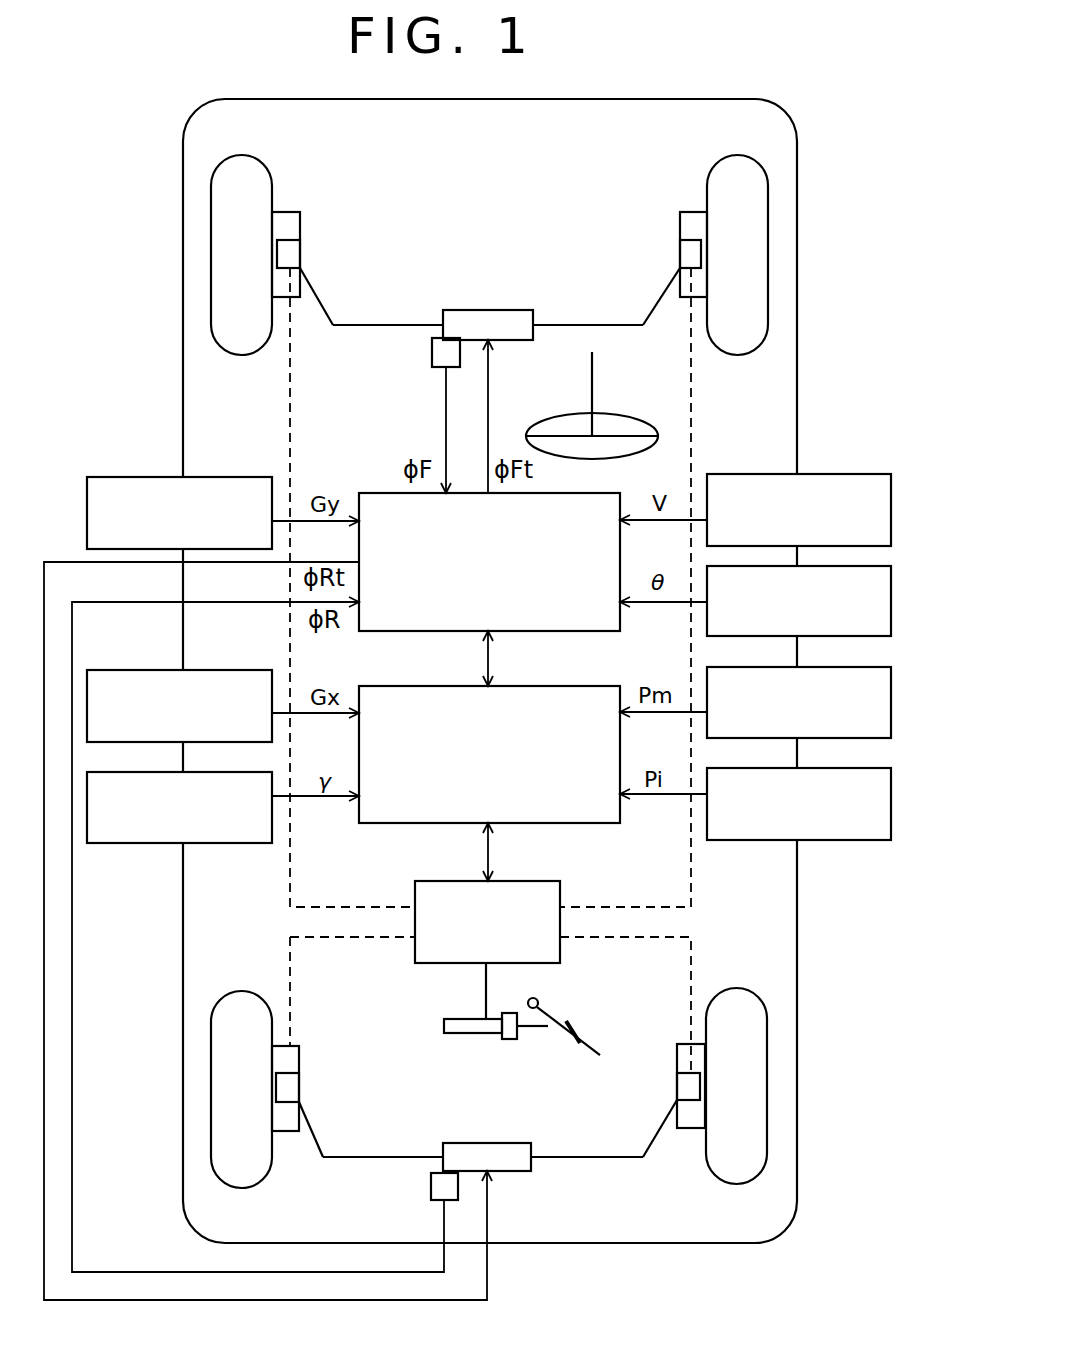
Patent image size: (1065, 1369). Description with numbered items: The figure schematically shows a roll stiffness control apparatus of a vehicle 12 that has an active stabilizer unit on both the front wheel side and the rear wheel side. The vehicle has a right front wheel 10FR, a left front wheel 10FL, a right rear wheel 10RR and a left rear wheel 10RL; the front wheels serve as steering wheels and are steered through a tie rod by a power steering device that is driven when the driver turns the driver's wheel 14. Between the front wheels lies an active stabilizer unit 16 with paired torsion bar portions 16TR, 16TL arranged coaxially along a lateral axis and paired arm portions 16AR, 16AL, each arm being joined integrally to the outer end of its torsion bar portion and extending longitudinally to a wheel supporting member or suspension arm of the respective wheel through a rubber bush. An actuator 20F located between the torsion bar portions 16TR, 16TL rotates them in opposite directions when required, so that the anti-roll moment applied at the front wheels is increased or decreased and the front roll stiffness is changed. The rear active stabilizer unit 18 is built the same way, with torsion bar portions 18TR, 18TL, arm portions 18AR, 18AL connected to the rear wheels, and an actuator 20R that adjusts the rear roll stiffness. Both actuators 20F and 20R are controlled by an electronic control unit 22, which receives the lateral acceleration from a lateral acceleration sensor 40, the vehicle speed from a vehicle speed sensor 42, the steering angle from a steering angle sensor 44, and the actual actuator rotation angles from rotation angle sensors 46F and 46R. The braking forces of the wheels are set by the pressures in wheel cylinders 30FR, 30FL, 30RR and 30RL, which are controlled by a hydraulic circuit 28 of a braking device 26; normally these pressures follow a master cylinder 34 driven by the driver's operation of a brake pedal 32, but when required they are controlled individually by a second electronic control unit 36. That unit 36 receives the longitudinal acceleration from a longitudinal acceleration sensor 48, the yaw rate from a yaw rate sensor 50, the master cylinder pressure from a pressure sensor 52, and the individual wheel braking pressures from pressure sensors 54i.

The left front wheel 10FL is at (211, 268).
The right front wheel 10FR is at (768, 268).
The left rear wheel 10RL is at (240, 991).
The right rear wheel 10RR is at (767, 1098).
The vehicle 12 is at (183, 395).
The driver's wheel 14 is at (564, 414).
The active stabilizer unit 16 is at (490, 255).
The arm portion 16AL is at (338, 283).
The arm portion 16AR is at (660, 298).
The torsion bar portion 16TL is at (418, 323).
The torsion bar portion 16TR is at (568, 294).
The active stabilizer unit 18 is at (488, 1152).
The arm portion 18AL is at (318, 1142).
The arm portion 18AR is at (660, 1134).
The torsion bar portion 18TL is at (418, 1157).
The torsion bar portion 18TR is at (578, 1158).
The actuator 20F is at (487, 310).
The actuator 20R is at (515, 1172).
The electronic control unit 22 is at (474, 600).
The braking device 26 is at (505, 1028).
The hydraulic circuit 28 is at (473, 958).
The wheel cylinder 30FL is at (300, 253).
The wheel cylinder 30FR is at (680, 253).
The wheel cylinder 30RL is at (299, 1088).
The wheel cylinder 30RR is at (677, 1086).
The brake pedal 32 is at (584, 1030).
The master cylinder 34 is at (462, 1018).
The electronic control unit 36 is at (474, 793).
The lateral acceleration sensor 40 is at (240, 477).
The vehicle speed sensor 42 is at (748, 474).
The steering angle sensor 44 is at (822, 636).
The rotation angle sensor 46F is at (432, 352).
The rotation angle sensor 46R is at (431, 1188).
The longitudinal acceleration sensor 48 is at (240, 670).
The yaw rate sensor 50 is at (222, 843).
The pressure sensor 52 is at (765, 667).
The pressure sensors 54i is at (840, 840).